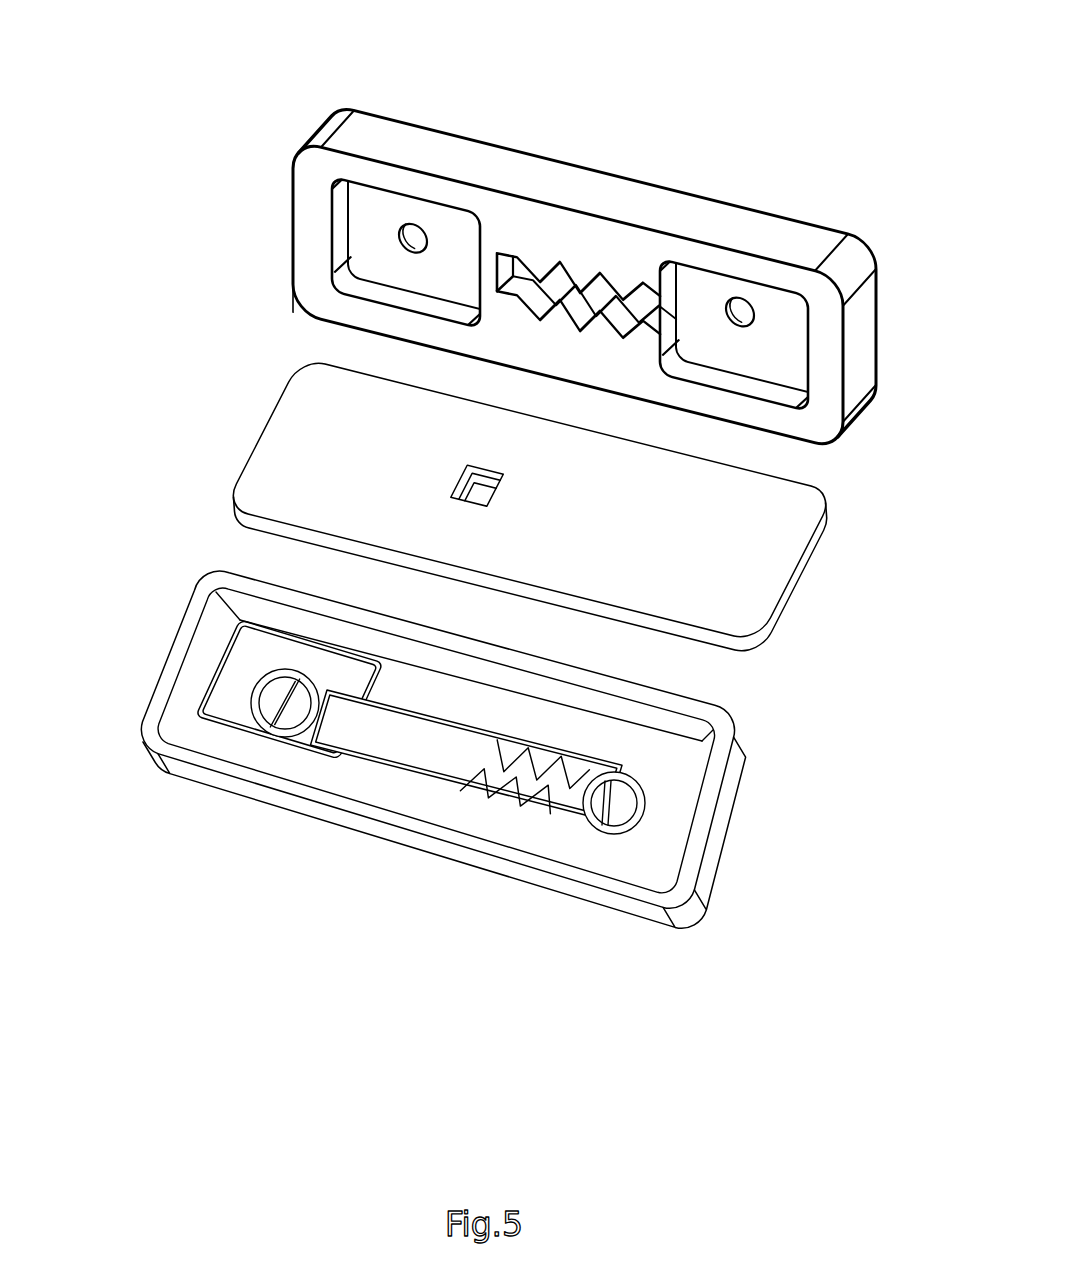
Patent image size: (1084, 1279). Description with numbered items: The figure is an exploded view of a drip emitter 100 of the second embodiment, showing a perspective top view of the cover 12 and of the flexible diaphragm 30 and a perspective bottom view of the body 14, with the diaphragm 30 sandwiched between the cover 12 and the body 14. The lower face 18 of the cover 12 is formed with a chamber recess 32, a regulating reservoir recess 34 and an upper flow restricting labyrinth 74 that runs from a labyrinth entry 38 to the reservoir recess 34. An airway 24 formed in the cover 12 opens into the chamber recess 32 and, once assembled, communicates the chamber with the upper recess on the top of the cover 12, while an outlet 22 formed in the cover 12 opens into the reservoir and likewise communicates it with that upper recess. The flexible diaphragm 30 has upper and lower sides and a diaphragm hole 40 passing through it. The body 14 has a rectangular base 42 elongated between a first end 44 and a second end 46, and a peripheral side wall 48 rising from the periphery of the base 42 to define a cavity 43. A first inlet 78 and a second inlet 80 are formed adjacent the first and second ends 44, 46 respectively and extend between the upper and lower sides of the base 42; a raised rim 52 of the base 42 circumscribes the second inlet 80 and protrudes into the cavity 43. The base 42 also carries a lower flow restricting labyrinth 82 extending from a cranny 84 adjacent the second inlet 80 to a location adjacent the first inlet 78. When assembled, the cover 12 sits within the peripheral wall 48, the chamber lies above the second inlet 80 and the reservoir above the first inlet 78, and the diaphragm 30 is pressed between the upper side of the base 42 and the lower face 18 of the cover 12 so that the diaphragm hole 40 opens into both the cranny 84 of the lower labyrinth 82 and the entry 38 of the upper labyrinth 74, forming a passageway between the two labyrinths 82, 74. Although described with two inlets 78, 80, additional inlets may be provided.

The enclosure assembly 100 is at (500, 514).
The cover 12 is at (571, 243).
The body 14 is at (443, 762).
The lower face of the cover 18 is at (313, 292).
The outlet 22 is at (740, 300).
The airway 24 is at (413, 224).
The flexible diaphragm 30 is at (496, 502).
The chamber recess 32 is at (382, 213).
The regulating reservoir recess 34 is at (777, 348).
The labyrinth entry 38 is at (525, 268).
The diaphragm hole 40 is at (470, 467).
The base 42 is at (237, 691).
The cavity 43 is at (724, 815).
The first end 44 is at (700, 795).
The second end 46 is at (263, 647).
The peripheral side wall 48 is at (742, 793).
The raised rim 52 is at (251, 721).
The upper flow restricting labyrinth 74 is at (608, 284).
The first inlet 78 is at (604, 835).
The second inlet 80 is at (224, 767).
The lower flow restricting labyrinth 82 is at (525, 777).
The cranny 84 is at (465, 810).